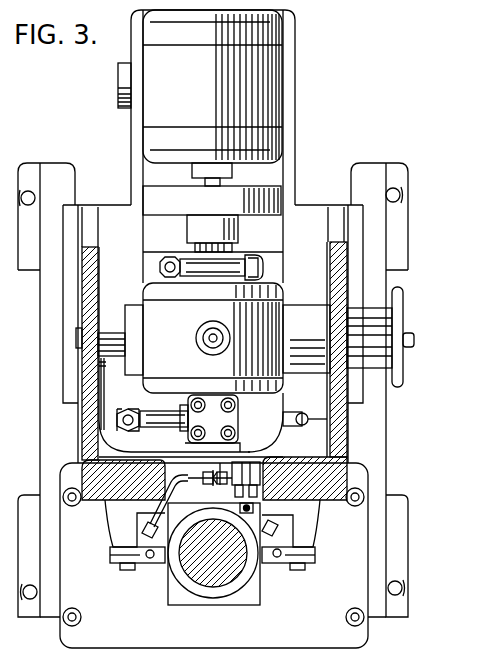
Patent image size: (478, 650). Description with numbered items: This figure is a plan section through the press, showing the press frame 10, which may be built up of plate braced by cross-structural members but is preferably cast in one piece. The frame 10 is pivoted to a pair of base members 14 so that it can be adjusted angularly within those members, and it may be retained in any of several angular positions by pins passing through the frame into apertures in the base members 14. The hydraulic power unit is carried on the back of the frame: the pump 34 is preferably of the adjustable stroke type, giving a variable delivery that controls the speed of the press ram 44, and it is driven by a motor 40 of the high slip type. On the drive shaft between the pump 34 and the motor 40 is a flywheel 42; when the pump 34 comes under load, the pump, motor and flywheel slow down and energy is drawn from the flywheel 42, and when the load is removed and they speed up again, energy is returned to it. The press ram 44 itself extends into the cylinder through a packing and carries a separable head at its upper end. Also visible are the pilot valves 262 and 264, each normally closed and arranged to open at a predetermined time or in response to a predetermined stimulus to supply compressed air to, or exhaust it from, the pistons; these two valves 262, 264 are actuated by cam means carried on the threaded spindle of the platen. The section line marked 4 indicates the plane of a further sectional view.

The frame 10 is at (88, 299).
The base members 14 is at (48, 379).
The pump 34 is at (264, 325).
The motor 40 is at (250, 79).
The flywheel 42 is at (238, 212).
The press ram 44 is at (237, 567).
The pilot valve 262 is at (270, 450).
The pilot valve 264 is at (256, 478).
The section line 4- 4 is at (266, 428).